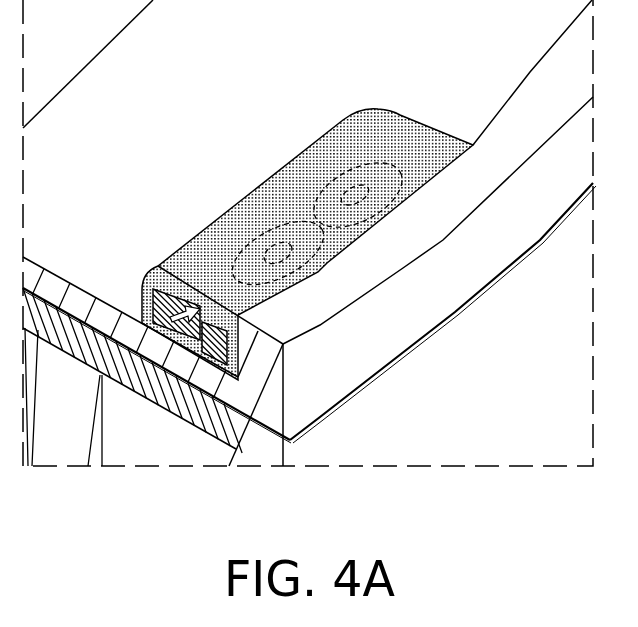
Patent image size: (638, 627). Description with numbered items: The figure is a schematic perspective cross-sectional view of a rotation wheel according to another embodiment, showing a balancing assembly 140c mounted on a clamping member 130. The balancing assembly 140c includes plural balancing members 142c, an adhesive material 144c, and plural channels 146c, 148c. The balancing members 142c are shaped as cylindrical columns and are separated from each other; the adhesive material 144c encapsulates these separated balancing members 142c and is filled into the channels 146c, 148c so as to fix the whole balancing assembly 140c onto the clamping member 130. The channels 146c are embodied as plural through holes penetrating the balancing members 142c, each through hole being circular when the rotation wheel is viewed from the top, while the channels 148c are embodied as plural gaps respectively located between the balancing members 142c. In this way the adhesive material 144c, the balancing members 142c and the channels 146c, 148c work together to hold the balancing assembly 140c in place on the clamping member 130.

The clamping member 130 is at (405, 318).
The balancing assembly 140c is at (294, 64).
The balancing members 142c is at (262, 228).
The adhesive material 144c is at (341, 147).
The channels 146c is at (281, 244).
The channels 148c is at (302, 204).